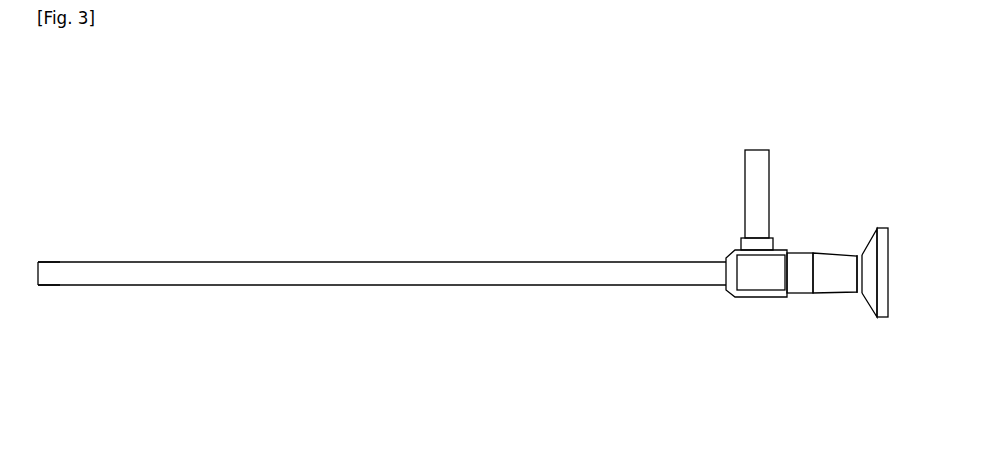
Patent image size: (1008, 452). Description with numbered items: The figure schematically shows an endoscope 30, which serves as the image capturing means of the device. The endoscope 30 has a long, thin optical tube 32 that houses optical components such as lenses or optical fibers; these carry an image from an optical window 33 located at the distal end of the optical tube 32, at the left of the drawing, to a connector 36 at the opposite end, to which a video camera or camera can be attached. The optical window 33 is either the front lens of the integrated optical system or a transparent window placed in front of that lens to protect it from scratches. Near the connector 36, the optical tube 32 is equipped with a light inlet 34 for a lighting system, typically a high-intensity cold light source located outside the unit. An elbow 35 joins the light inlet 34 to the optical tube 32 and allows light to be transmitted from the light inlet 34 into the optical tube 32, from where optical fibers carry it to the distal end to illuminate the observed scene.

The endoscope 30 is at (375, 135).
The optical tube 32 is at (205, 265).
The optical window 33 is at (48, 275).
The light inlet 34 is at (757, 167).
The elbow 35 is at (763, 275).
The connector 36 is at (878, 310).